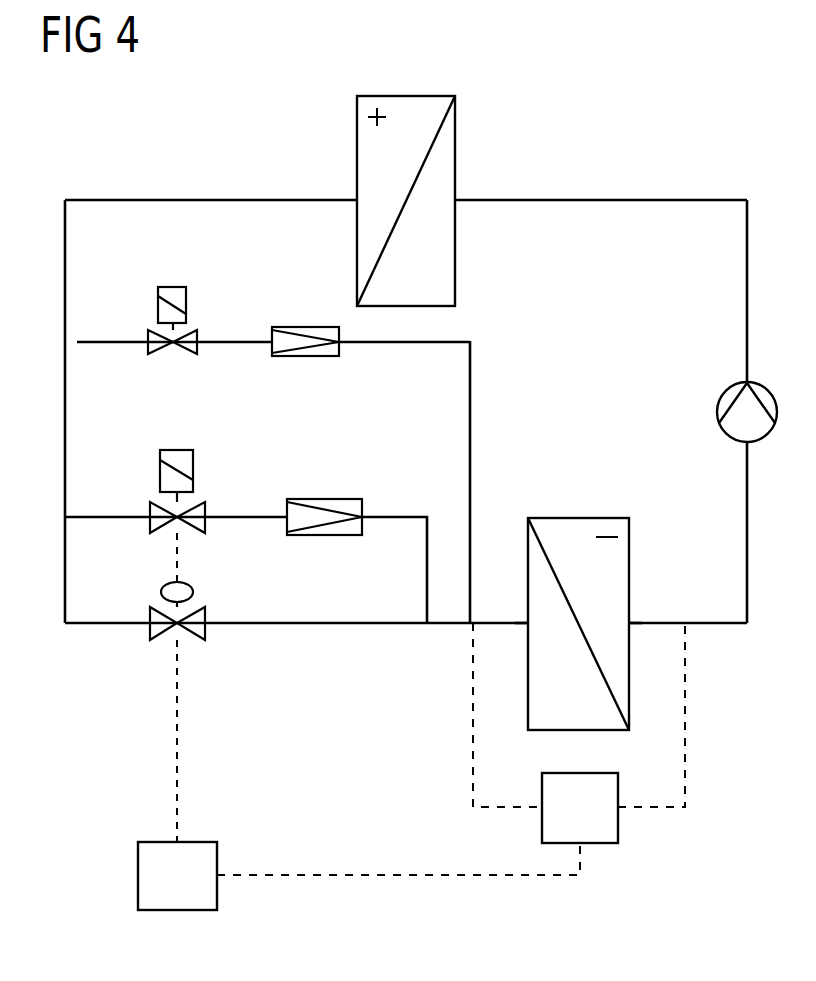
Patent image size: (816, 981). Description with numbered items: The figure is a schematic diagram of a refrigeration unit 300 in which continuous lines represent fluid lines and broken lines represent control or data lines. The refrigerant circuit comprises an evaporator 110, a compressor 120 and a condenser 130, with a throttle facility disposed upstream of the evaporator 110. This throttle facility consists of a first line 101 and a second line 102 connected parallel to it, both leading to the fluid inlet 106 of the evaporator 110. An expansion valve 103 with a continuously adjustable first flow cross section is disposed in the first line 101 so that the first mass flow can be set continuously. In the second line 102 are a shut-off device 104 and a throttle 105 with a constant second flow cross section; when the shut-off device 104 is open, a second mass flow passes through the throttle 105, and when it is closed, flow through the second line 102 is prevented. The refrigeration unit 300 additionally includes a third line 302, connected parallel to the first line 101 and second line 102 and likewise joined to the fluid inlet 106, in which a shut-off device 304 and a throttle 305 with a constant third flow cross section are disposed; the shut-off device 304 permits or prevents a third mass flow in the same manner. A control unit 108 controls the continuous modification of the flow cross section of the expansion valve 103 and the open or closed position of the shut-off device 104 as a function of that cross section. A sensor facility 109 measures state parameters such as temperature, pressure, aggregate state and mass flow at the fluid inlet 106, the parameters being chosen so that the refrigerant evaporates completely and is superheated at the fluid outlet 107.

The refrigeration unit 300 is at (668, 92).
The condenser 130 is at (405, 95).
The compressor 120 is at (717, 410).
The evaporator 110 is at (580, 516).
The first line 101 is at (103, 628).
The second line 102 is at (103, 512).
The expansion valve 103 is at (205, 615).
The shut-off device 104 is at (178, 448).
The throttle 105 is at (323, 497).
The fluid inlet 106 is at (527, 617).
The fluid outlet 107 is at (633, 617).
The control unit 108 is at (137, 876).
The sensor facility 109 is at (620, 823).
The third line 302 is at (107, 338).
The shut-off device 304 is at (172, 284).
The throttle 305 is at (305, 326).